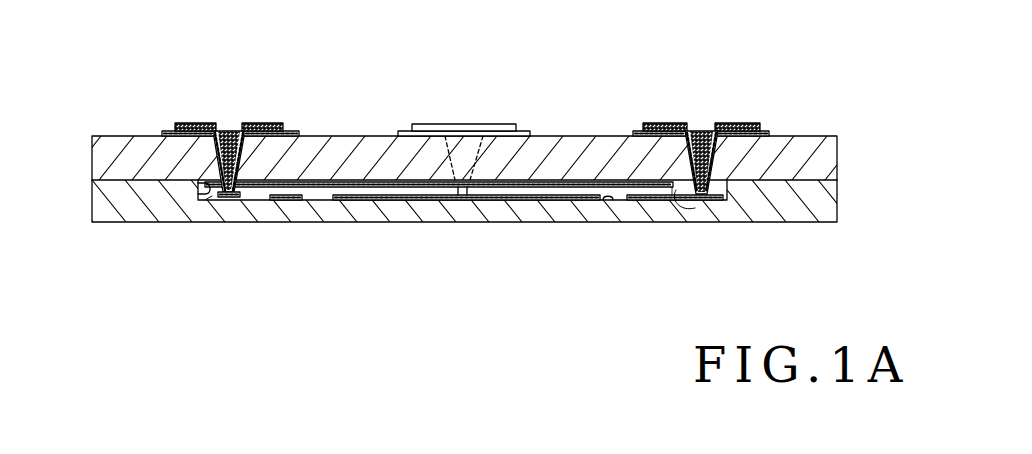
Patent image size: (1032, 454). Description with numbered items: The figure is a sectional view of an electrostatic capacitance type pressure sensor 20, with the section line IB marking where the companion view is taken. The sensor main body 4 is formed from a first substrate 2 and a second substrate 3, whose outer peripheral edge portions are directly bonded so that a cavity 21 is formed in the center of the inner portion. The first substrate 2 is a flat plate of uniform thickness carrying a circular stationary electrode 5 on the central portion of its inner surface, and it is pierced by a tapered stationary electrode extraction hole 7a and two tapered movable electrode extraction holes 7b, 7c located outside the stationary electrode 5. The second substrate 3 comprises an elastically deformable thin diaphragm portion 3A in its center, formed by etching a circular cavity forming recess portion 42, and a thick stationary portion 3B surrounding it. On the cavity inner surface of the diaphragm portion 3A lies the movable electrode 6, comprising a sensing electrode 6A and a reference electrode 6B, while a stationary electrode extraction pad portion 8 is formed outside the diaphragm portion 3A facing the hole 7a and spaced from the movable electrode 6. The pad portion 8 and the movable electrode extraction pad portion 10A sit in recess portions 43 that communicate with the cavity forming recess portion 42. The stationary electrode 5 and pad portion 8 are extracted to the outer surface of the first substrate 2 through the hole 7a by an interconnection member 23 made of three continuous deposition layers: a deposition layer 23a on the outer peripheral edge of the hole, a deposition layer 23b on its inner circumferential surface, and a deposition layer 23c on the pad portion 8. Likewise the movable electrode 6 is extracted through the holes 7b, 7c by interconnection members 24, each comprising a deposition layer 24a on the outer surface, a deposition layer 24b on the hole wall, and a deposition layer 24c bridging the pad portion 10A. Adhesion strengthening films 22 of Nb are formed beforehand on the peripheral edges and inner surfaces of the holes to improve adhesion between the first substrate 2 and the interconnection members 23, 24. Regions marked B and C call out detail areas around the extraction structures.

The first substrate 2 is at (123, 148).
The second substrate 3 is at (104, 188).
The diaphragm portion 3A is at (522, 208).
The stationary portion 3B is at (804, 200).
The sensor main body 4 is at (139, 66).
The stationary electrode 5 is at (556, 182).
The movable electrode 6 is at (435, 263).
The sensing electrode 6A is at (402, 202).
The reference electrode 6B is at (298, 202).
The stationary electrode extraction hole 7a is at (216, 168).
The movable electrode extraction hole 7b is at (672, 130).
The movable electrode extraction hole 7c is at (458, 130).
The stationary electrode extraction pad portion 8 is at (226, 198).
The movable electrode extraction pad portion 10A is at (704, 202).
The electrostatic capacitance type pressure sensor 20 is at (848, 24).
The cavity 21 is at (664, 192).
The adhesion strengthening film 22 is at (292, 132).
The interconnection member 23 is at (229, 78).
The deposition layer 23a is at (264, 126).
The deposition layer 23b is at (234, 128).
The deposition layer 23c is at (246, 198).
The interconnection member 24 is at (490, 123).
The deposition layer 24a is at (748, 130).
The deposition layer 24b is at (700, 128).
The deposition layer 24c is at (712, 204).
The cavity forming recess portion 42 is at (609, 203).
The recess portion 43 is at (198, 184).
The region B is at (204, 203).
The region C is at (729, 172).
The line IB— IB is at (80, 190).